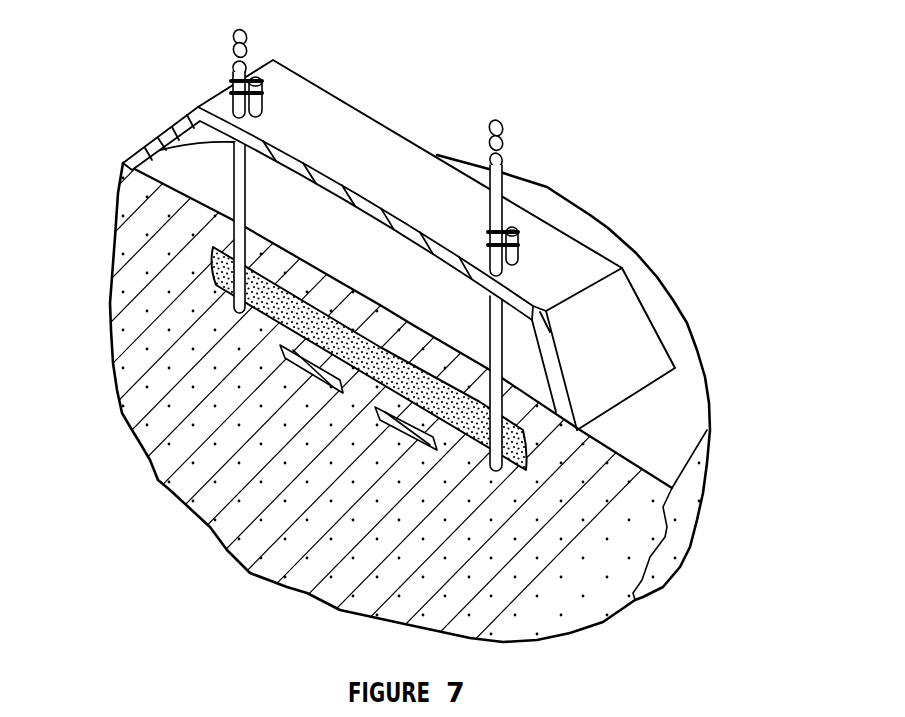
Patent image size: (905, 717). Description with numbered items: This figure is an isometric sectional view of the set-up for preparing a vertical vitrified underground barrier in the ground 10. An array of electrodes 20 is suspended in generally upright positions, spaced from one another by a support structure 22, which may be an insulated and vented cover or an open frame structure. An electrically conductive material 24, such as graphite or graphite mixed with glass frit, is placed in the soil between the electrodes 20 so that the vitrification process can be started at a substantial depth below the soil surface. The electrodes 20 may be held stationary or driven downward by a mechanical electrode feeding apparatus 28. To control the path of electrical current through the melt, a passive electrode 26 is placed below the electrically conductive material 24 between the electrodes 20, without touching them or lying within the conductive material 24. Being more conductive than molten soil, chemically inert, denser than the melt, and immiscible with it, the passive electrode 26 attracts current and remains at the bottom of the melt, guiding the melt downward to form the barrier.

The ground 10 is at (611, 462).
The electrodes 20 is at (503, 207).
The support structure 22 is at (150, 142).
The electrically conductive material 24 is at (210, 283).
The passive electrode 26 is at (283, 356).
The mechanical electrode feeding apparatus 28 is at (262, 100).